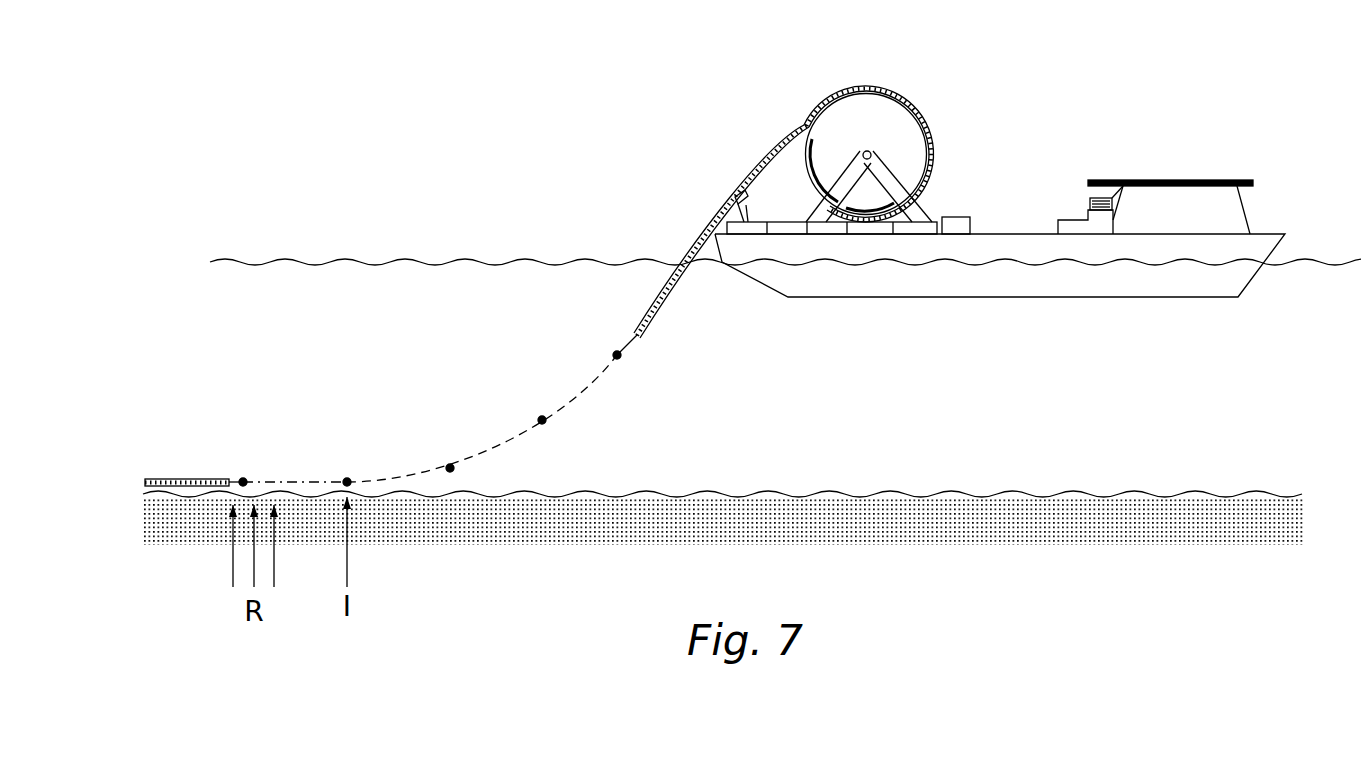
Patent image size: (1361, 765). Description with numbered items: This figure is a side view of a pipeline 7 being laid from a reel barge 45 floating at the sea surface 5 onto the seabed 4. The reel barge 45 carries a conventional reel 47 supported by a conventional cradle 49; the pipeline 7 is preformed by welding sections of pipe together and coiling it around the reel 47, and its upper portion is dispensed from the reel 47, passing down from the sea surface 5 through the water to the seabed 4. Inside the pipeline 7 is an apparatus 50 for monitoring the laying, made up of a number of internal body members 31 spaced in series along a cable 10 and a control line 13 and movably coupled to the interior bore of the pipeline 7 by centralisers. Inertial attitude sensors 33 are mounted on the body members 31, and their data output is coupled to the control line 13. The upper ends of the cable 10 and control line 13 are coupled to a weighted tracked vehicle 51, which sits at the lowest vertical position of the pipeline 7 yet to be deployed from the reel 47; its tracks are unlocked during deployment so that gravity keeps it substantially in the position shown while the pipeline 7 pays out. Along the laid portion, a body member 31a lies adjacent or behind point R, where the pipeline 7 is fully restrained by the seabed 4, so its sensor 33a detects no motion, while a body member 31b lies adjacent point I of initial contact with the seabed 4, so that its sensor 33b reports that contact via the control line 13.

The seabed 4 is at (955, 487).
The sea surface 5 is at (430, 257).
The pipeline 7 is at (655, 330).
The cable 10 is at (494, 418).
The control line 13 is at (588, 382).
The internal body member 31 is at (655, 405).
The inertial attitude sensor 33 is at (628, 360).
The body member 31a is at (211, 410).
The sensor 33a is at (240, 475).
The body member 31b is at (353, 430).
The sensor 33b is at (347, 474).
The reel barge 45 is at (1125, 280).
The reel 47 is at (908, 97).
The cradle 49 is at (853, 173).
The apparatus 50 is at (497, 355).
The weighted tracked vehicle 51 is at (873, 207).